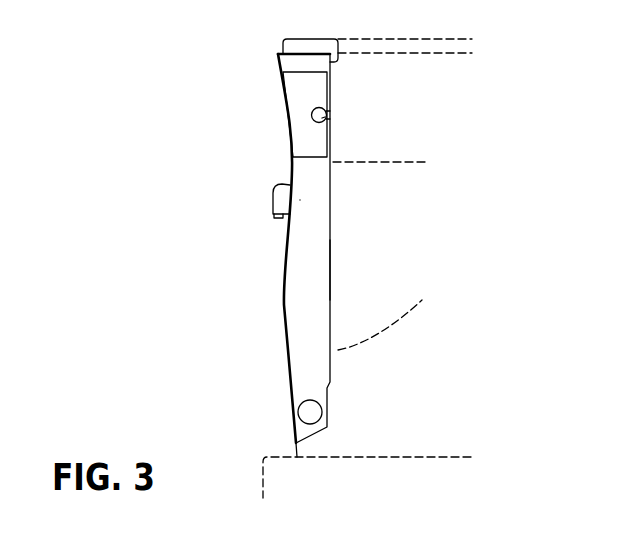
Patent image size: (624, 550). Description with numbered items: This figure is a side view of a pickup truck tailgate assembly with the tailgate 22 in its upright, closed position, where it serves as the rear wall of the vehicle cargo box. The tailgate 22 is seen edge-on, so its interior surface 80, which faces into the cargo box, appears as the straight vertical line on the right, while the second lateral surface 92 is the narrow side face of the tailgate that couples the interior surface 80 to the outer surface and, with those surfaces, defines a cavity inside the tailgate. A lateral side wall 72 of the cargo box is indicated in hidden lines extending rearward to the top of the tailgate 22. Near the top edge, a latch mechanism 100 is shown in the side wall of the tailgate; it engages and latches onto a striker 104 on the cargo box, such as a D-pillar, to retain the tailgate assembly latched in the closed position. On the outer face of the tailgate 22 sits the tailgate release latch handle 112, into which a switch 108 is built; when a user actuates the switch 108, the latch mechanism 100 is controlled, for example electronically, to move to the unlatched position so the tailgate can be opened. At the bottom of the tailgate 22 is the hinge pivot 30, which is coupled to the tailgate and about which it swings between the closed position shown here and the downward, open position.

The tailgate 22 is at (282, 91).
The latch mechanism 100 is at (328, 110).
The striker 104 is at (333, 118).
The lateral side wall 72 is at (410, 111).
The tailgate release latch handle 112 is at (278, 186).
The switch 108 is at (275, 218).
The second lateral surface 92 is at (315, 281).
The interior surface 80 is at (331, 275).
The hinge pivot 30 is at (307, 401).